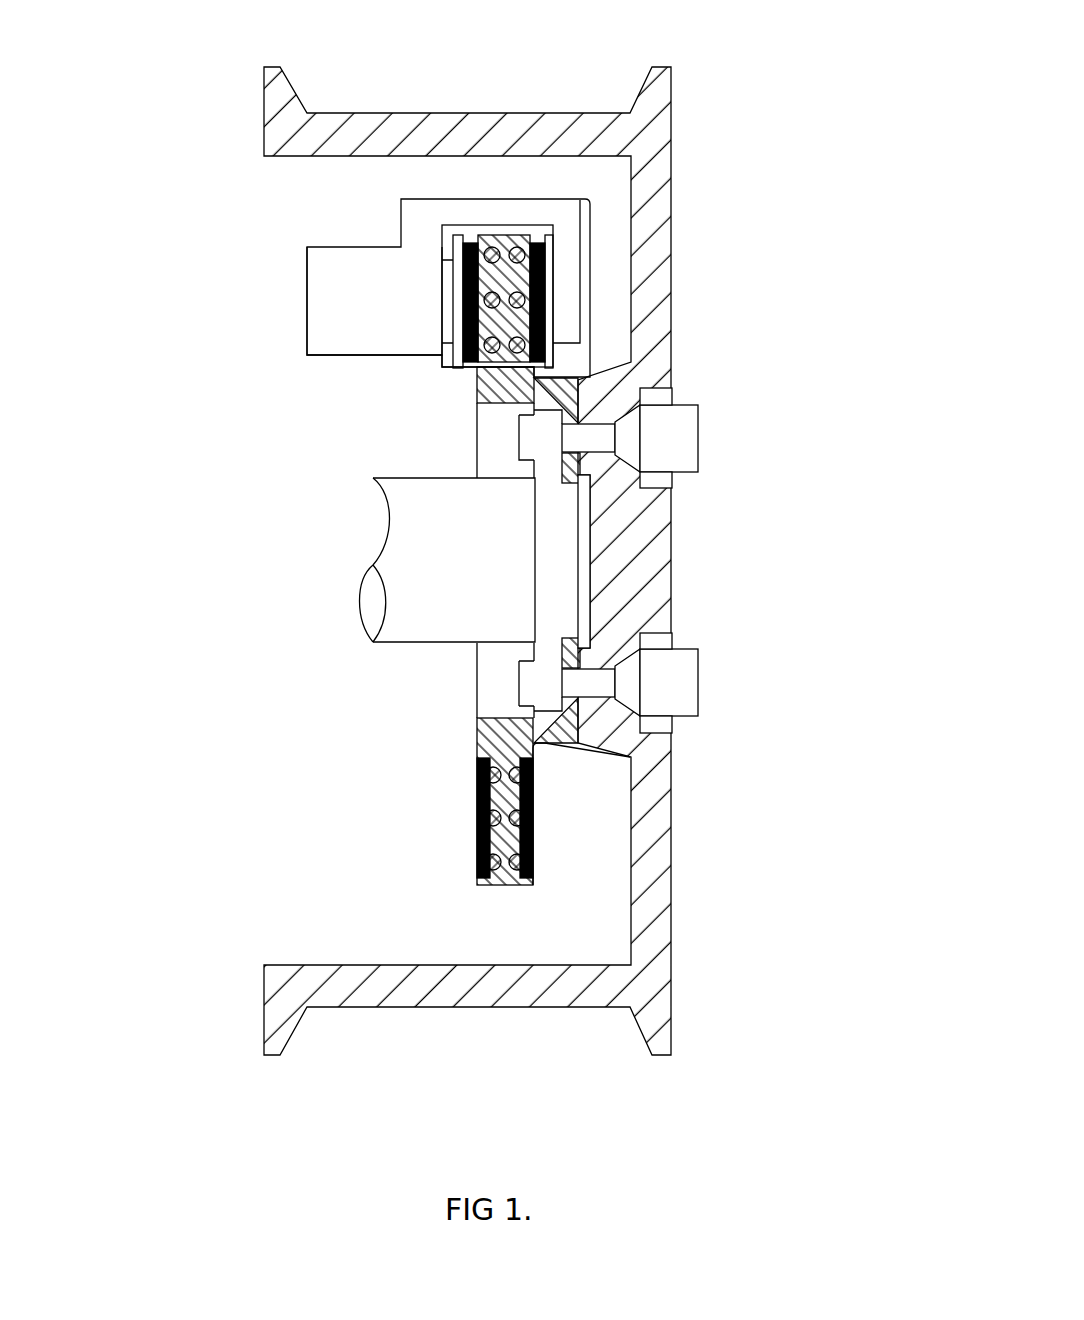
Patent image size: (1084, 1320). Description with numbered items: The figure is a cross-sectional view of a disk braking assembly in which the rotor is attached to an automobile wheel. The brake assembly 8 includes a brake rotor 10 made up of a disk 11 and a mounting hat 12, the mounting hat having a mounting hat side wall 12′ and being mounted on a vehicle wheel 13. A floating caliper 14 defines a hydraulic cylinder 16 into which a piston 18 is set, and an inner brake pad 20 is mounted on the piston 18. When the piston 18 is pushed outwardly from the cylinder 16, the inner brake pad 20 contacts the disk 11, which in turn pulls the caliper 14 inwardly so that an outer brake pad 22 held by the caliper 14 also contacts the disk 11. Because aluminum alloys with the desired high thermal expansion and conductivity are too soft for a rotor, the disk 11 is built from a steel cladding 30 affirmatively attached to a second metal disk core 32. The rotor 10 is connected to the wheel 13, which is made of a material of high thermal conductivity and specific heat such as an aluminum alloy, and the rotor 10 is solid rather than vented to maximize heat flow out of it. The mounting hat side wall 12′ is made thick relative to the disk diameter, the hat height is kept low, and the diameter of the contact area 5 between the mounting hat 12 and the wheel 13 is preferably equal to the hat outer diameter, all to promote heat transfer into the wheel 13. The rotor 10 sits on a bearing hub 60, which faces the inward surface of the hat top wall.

The contact area 5 is at (625, 405).
The brake assembly 8 is at (157, 402).
The brake rotor 10 is at (401, 808).
The disk 11 is at (503, 237).
The mounting hat 12 is at (573, 762).
The mounting hat side wall 12′ is at (537, 400).
The vehicle wheel 13 is at (657, 245).
The floating caliper 14 is at (415, 243).
The hydraulic cylinder 16 is at (322, 327).
The piston 18 is at (452, 317).
The inner brake pad 20 is at (472, 240).
The outer brake pad 22 is at (540, 250).
The steel cladding 30 is at (477, 828).
The second metal disk core 32 is at (495, 740).
The bearing hub 60 is at (403, 622).